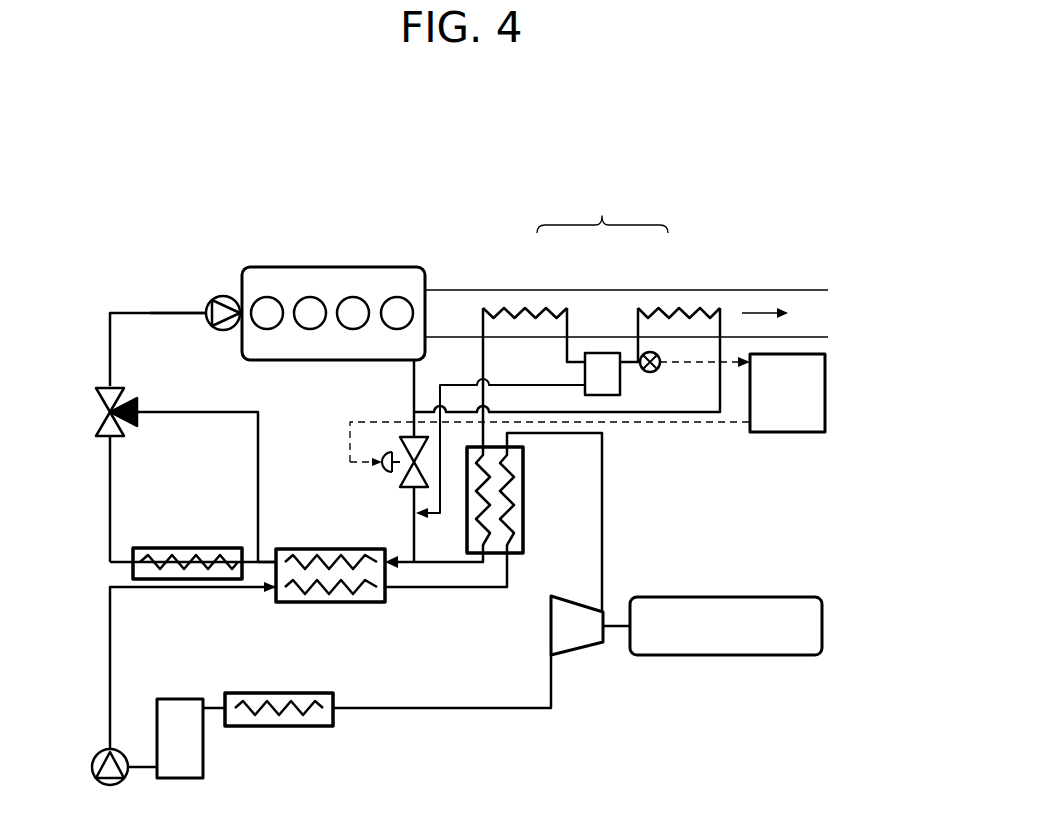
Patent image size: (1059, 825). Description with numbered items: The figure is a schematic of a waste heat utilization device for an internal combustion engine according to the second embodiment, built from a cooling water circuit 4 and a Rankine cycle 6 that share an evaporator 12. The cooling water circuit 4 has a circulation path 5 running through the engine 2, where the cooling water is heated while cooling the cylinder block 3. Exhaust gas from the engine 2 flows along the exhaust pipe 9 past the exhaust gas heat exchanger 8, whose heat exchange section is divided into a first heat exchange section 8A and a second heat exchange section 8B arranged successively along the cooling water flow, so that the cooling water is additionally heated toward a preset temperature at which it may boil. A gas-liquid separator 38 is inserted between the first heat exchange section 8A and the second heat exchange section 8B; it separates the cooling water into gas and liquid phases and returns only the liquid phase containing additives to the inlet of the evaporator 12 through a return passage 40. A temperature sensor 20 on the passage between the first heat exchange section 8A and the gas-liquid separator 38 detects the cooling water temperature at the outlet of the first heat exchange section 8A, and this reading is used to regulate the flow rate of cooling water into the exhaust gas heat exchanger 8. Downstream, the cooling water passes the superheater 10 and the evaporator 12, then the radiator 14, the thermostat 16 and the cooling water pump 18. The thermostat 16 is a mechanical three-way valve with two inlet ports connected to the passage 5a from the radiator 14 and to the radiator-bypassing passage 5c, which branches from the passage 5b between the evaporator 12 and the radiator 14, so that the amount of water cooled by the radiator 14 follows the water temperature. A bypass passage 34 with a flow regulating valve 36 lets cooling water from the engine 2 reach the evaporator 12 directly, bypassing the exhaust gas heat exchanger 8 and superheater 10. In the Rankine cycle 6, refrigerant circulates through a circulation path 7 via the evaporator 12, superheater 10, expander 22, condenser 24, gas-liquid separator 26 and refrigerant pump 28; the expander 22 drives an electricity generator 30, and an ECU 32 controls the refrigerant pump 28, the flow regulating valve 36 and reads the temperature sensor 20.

The engine 2 is at (326, 262).
The cylinder block 3 is at (392, 288).
The cooling water circuit 4 is at (135, 308).
The circulation path 5 is at (180, 311).
The passage 5a is at (108, 468).
The passage 5b is at (266, 560).
The radiator-bypassing passage 5c is at (261, 430).
The Rankine cycle 6 is at (421, 716).
The circulation path 7 is at (500, 710).
The exhaust gas heat exchanger 8 is at (602, 206).
The first heat exchange section 8A is at (639, 304).
The second heat exchange section 8B is at (567, 304).
The exhaust pipe 9 is at (692, 289).
The superheater 10 is at (526, 471).
The evaporator 12 is at (340, 603).
The radiator 14 is at (188, 547).
The thermostat 16 is at (95, 403).
The cooling water pump 18 is at (228, 296).
The temperature sensor 20 is at (658, 368).
The expander 22 is at (575, 655).
The condenser 24 is at (250, 692).
The gas-liquid separator 26 is at (171, 698).
The refrigerant pump 28 is at (100, 751).
The electricity generator 30 is at (700, 596).
The ECU 32 is at (790, 434).
The bypass passage 34 is at (412, 418).
The flow regulating valve 36 is at (383, 474).
The gas-liquid separator 38 is at (612, 397).
The return passage 40 is at (531, 384).